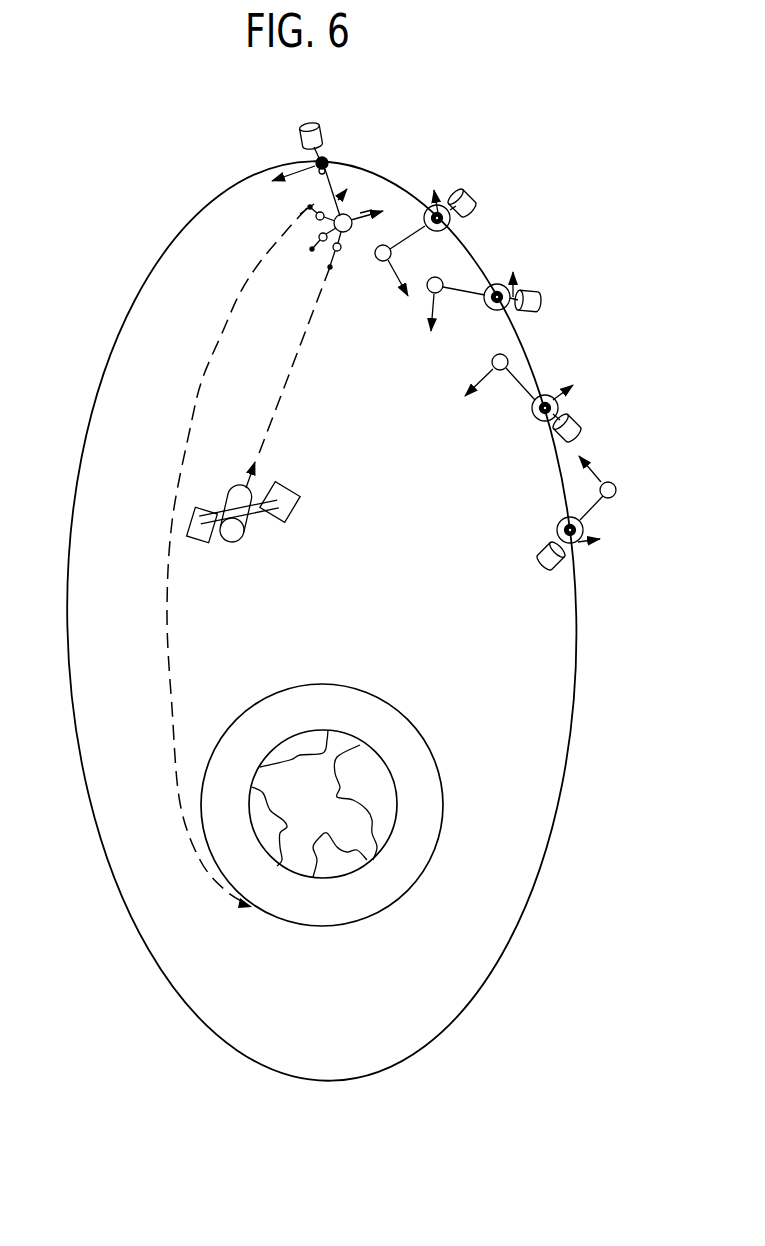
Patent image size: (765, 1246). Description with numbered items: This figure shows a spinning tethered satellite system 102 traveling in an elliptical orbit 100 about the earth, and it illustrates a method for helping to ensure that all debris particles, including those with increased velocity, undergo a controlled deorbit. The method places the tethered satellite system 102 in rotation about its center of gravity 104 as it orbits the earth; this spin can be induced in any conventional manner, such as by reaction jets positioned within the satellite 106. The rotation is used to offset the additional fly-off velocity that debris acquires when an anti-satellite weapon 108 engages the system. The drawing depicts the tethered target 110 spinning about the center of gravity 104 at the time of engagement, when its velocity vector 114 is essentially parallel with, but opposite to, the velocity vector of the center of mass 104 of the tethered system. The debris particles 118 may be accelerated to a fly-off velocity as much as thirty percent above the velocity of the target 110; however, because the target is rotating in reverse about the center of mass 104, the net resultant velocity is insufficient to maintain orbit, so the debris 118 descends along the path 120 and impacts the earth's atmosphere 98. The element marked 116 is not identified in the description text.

The earth's atmosphere 98 is at (403, 893).
The elliptical orbit 100 is at (557, 807).
The tethered satellite system 102 is at (342, 196).
The center of gravity 104 is at (312, 160).
The satellite 106 is at (563, 561).
The anti-satellite weapon 108 is at (279, 497).
The tethered target 110 is at (347, 233).
The velocity vector 114 is at (360, 211).
The apogee point 116 is at (307, 208).
The debris particles 118 is at (320, 254).
The path 120 is at (190, 430).